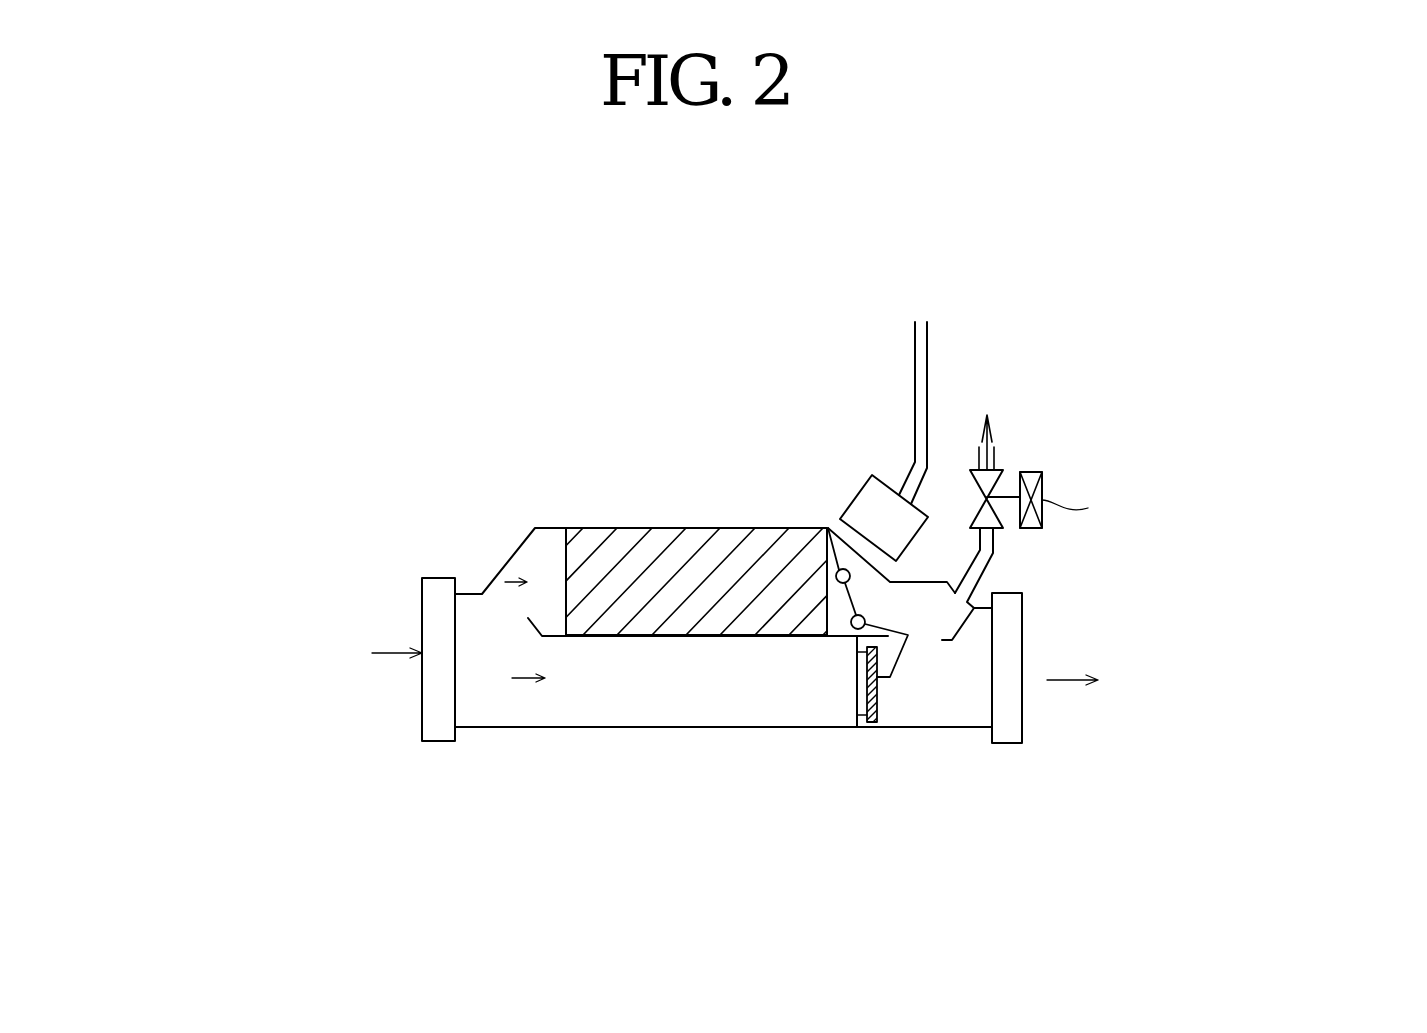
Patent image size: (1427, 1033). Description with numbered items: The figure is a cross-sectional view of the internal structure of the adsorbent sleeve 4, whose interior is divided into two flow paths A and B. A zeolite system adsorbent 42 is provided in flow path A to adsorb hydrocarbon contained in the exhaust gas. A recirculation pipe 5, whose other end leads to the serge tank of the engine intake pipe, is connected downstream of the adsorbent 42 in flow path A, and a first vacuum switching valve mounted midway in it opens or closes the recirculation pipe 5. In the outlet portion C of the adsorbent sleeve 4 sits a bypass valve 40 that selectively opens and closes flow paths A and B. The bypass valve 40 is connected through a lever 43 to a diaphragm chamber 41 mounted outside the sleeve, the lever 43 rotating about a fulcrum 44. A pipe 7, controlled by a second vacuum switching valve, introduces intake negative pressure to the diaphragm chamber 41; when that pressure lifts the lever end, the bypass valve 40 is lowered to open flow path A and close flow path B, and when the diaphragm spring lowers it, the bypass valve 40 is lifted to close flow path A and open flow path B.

The adsorbent sleeve 4 is at (598, 453).
The recirculation pipe 5 is at (993, 556).
The pipe 7 is at (933, 323).
The bypass valve 40 is at (877, 706).
The diaphragm chamber 41 is at (868, 476).
The adsorbent 42 is at (679, 537).
The lever 43 is at (831, 528).
The fulcrum 44 is at (866, 620).